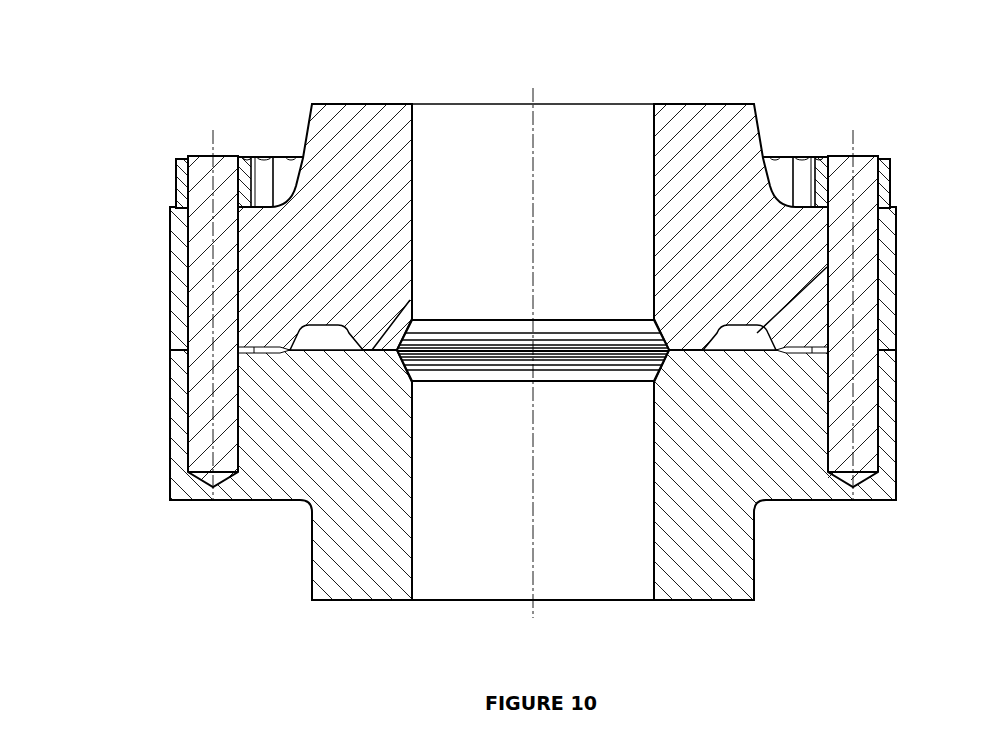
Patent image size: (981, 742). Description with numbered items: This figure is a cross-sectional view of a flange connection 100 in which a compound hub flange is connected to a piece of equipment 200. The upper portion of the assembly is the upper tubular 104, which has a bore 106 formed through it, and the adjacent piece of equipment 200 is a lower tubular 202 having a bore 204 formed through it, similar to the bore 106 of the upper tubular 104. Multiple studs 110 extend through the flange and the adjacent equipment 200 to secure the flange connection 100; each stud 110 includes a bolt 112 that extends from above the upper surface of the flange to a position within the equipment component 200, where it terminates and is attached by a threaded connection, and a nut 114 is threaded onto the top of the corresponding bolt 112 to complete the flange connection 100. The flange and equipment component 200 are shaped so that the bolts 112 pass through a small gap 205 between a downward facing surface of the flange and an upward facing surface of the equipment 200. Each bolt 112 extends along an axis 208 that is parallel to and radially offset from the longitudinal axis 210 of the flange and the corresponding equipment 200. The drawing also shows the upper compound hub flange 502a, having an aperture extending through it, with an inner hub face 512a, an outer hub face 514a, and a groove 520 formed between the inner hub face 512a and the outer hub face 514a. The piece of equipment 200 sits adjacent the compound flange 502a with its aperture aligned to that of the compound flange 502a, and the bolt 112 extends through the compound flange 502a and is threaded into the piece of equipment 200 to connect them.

The flange connection 100 is at (473, 333).
The upper tubular 104 is at (343, 142).
The bore 106 is at (412, 146).
The stud 110 is at (495, 292).
The bolt 112 is at (203, 248).
The nut 114 is at (175, 177).
The piece of equipment 200 is at (187, 487).
The lower tubular 202 is at (345, 552).
The bore 204 is at (412, 541).
The gap 205 is at (170, 350).
The axis 208 is at (213, 402).
The longitudinal axis 210 is at (533, 520).
The upper compound hub flange 502a is at (180, 270).
The inner hub face 512a is at (378, 347).
The outer hub face 514a is at (288, 348).
The groove 520 is at (343, 349).